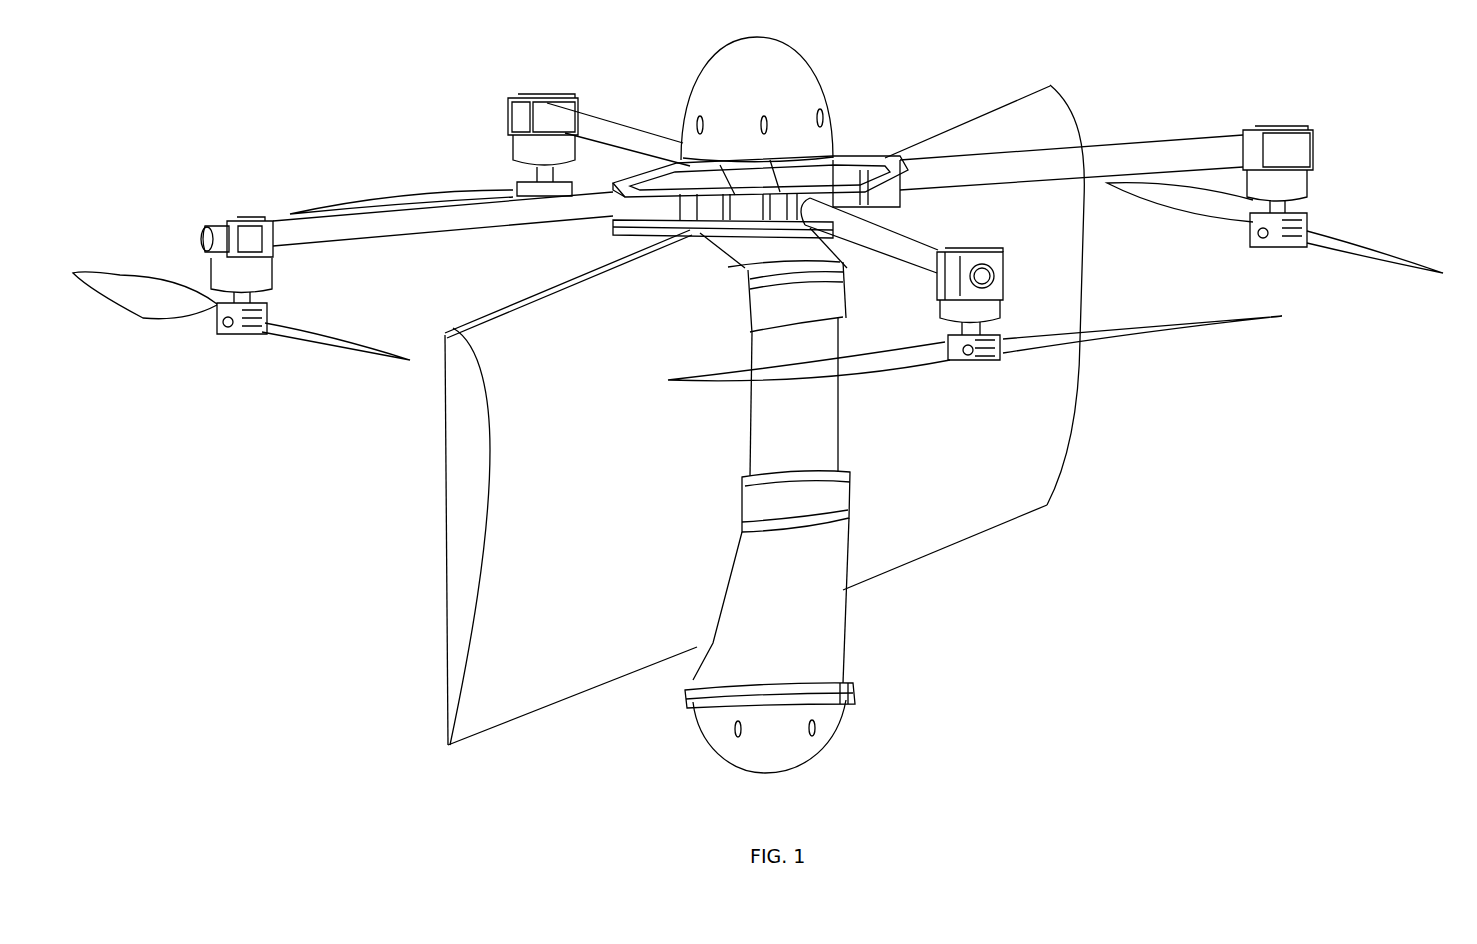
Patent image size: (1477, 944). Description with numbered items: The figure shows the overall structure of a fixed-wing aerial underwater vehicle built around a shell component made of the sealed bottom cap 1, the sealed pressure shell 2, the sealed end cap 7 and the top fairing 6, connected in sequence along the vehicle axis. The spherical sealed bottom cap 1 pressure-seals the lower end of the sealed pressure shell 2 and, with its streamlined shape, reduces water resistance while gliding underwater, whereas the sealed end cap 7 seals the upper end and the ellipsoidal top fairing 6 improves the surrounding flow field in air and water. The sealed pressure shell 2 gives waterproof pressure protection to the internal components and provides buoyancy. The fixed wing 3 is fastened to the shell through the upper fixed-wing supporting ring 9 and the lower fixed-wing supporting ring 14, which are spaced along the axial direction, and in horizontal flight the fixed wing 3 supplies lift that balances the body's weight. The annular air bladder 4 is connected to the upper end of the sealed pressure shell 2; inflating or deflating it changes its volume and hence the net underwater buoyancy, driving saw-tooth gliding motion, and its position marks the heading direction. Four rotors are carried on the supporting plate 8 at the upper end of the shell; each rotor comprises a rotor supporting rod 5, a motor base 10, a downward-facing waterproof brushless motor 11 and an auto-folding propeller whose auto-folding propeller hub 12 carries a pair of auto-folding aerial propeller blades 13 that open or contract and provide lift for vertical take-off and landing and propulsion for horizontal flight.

The sealed bottom cap 1 is at (714, 731).
The sealed pressure shell 2 is at (708, 660).
The fixed wing 3 is at (457, 553).
The annular air bladder 4 is at (660, 235).
The rotor supporting rod 5 is at (328, 228).
The top fairing 6 is at (708, 84).
The sealed end cap 7 is at (808, 162).
The supporting plate 8 is at (893, 158).
The upper fixed-wing supporting ring 9 is at (818, 295).
The motor base 10 is at (1008, 280).
The waterproof brushless motor 11 is at (1002, 307).
The auto-folding propeller hub 12 is at (988, 360).
The auto-folding aerial propeller blades 13 is at (872, 368).
The lower fixed-wing supporting ring 14 is at (824, 504).